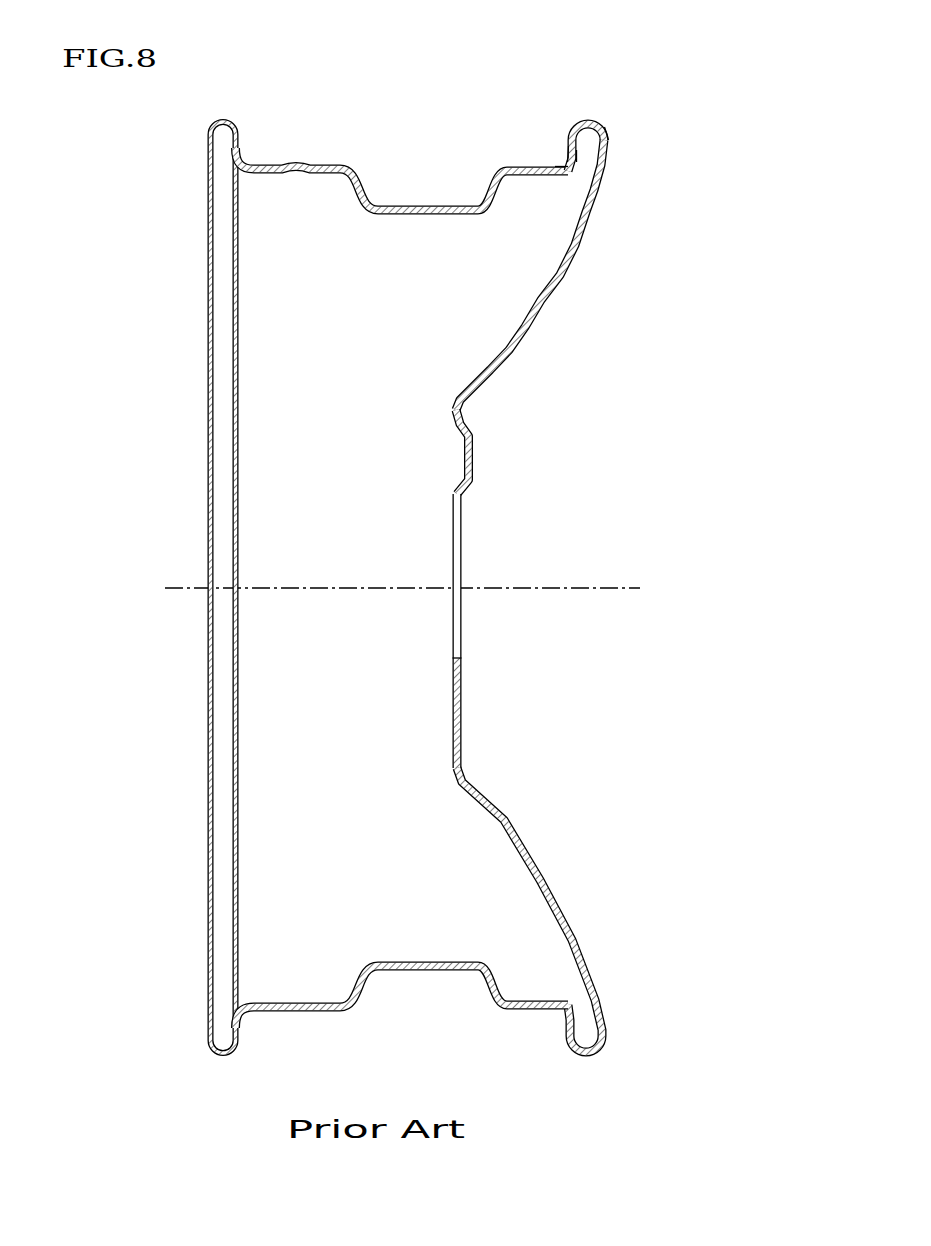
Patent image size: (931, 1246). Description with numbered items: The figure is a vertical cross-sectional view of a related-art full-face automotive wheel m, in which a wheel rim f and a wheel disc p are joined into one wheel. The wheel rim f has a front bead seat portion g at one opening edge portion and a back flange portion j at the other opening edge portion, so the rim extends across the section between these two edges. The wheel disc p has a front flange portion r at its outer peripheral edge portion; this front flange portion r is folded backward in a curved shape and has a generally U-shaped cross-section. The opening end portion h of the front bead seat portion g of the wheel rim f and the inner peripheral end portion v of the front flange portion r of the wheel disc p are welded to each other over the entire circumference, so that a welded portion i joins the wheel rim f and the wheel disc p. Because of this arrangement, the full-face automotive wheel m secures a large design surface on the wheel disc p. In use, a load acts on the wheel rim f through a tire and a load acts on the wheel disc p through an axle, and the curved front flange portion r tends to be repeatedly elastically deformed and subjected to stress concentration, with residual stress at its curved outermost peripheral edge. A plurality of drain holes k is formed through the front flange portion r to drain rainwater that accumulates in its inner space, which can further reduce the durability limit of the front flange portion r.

The back flange portion j is at (222, 121).
The wheel rim f is at (327, 165).
The front bead seat portion g is at (527, 162).
The drain holes k is at (592, 120).
The welded portion i is at (565, 162).
The opening end portion h is at (565, 165).
The inner peripheral end portion v is at (574, 163).
The front flange portion r is at (603, 128).
The wheel disc p is at (532, 327).
The full-face automotive wheel m is at (633, 462).